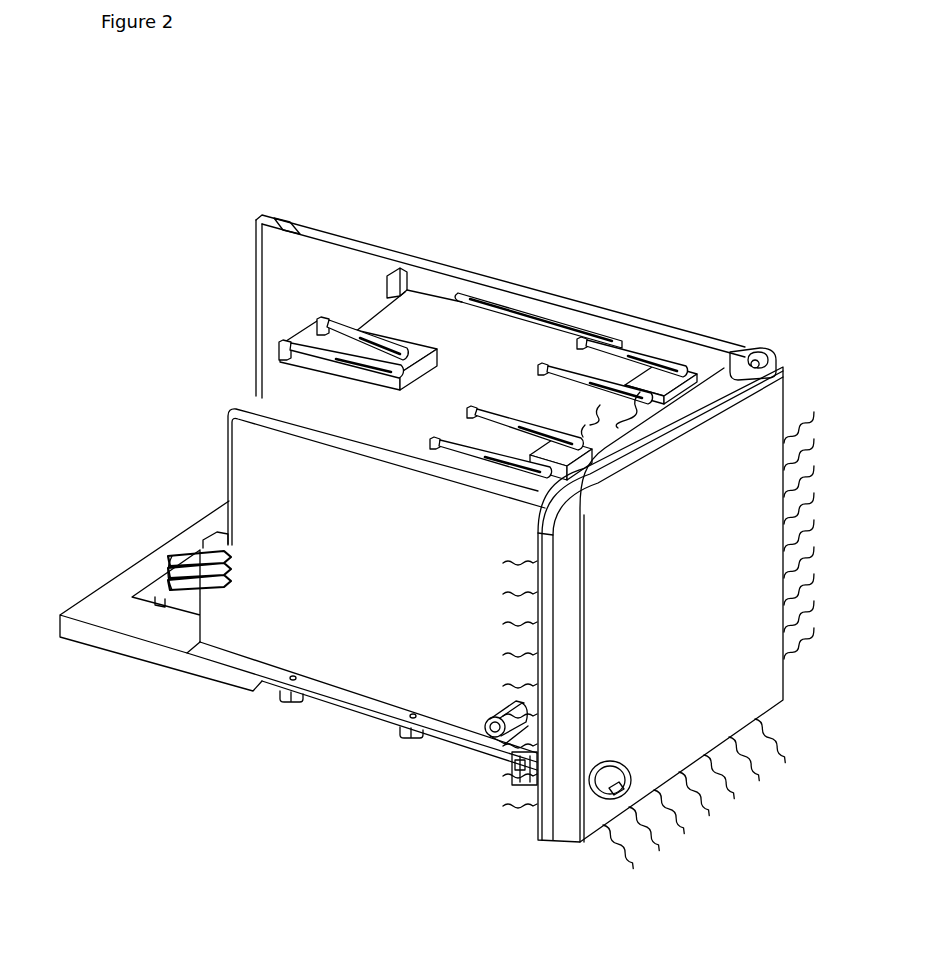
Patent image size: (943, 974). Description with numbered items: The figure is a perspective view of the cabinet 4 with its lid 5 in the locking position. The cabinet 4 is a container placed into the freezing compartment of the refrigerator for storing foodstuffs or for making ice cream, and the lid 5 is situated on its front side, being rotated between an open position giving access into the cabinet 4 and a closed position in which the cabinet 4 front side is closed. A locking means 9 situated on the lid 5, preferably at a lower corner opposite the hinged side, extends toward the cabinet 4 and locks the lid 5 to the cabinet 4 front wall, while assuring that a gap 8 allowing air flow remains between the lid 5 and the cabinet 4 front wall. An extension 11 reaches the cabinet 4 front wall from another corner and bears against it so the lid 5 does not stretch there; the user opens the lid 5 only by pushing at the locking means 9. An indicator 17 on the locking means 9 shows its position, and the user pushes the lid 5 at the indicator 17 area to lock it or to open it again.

The cabinet 4 is at (467, 233).
The lid 5 is at (573, 704).
The gap 8 is at (648, 434).
The locking means 9 is at (597, 797).
The extension 11 is at (560, 512).
The indicator 17 is at (608, 797).